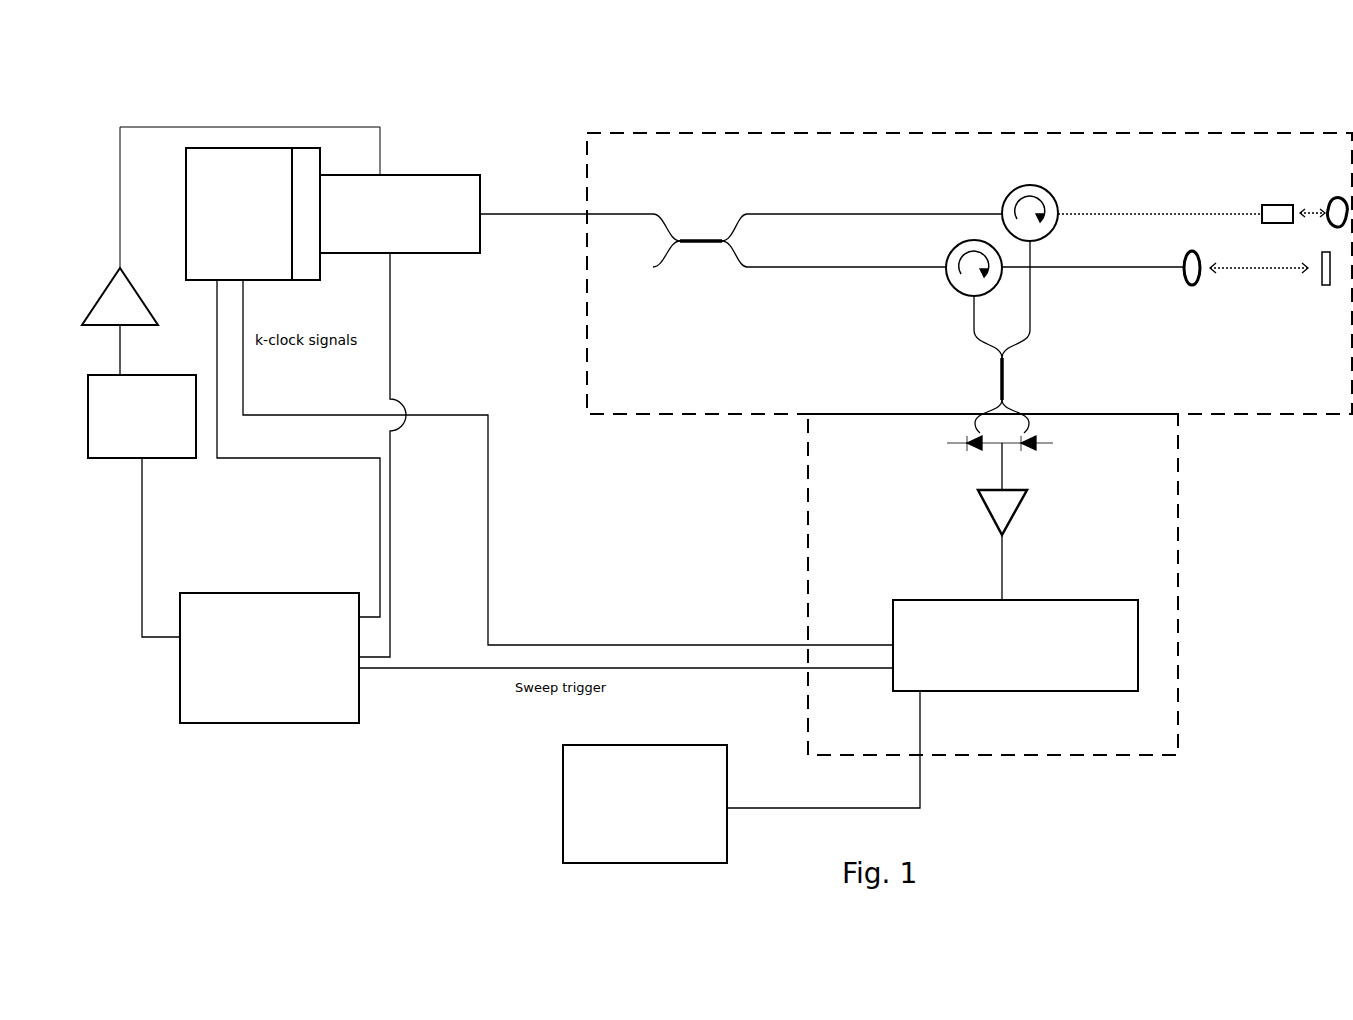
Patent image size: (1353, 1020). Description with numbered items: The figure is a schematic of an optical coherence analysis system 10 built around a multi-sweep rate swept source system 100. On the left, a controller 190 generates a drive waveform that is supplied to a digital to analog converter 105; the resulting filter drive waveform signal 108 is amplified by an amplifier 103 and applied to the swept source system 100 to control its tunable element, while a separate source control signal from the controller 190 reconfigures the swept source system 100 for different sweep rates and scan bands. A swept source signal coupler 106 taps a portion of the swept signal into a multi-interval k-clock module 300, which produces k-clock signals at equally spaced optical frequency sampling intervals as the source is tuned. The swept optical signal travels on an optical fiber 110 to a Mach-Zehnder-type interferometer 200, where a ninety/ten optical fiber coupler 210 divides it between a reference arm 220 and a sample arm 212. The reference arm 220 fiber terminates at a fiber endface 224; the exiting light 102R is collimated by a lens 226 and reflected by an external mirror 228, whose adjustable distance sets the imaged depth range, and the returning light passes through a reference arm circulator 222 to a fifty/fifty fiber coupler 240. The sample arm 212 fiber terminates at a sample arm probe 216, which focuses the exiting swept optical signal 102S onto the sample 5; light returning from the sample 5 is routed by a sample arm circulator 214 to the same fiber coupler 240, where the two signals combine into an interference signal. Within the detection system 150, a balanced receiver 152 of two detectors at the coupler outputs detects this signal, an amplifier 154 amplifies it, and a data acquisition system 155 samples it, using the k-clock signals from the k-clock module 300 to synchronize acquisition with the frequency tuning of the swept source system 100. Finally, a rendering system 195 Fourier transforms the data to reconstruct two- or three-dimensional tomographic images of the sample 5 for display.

The optical coherence analysis system 10 is at (1172, 797).
The sample 5 is at (1338, 198).
The multi-sweep rate swept source system 100 is at (400, 214).
The exiting swept optical signal 102S is at (1318, 208).
The light exiting from the reference arm fiber endface 102R is at (1257, 268).
The amplifier 103 is at (93, 328).
The digital to analog converter 105 is at (142, 506).
The swept source signal coupler 106 is at (305, 148).
The filter drive waveform signal 108 is at (210, 127).
The optical fiber 110 is at (548, 213).
The detection system 150 is at (993, 584).
The balanced receiver 152 is at (1033, 448).
The amplifier 154 is at (1020, 503).
The data acquisition system 155 is at (1083, 600).
The controller 190 is at (269, 658).
The rendering system 195 is at (741, 777).
The interferometer 200 is at (969, 283).
The optical fiber coupler 210 is at (702, 238).
The sample arm 212 is at (857, 213).
The sample arm circulator 214 is at (1028, 186).
The sample arm probe 216 is at (1262, 208).
The reference arm 220 is at (833, 267).
The reference arm circulator 222 is at (948, 282).
The fiber endface 224 is at (1178, 263).
The lens 226 is at (1187, 283).
The mirror 228 is at (1333, 287).
The fiber coupler 240 is at (1003, 378).
The multi-interval k-clock module 300 is at (253, 214).